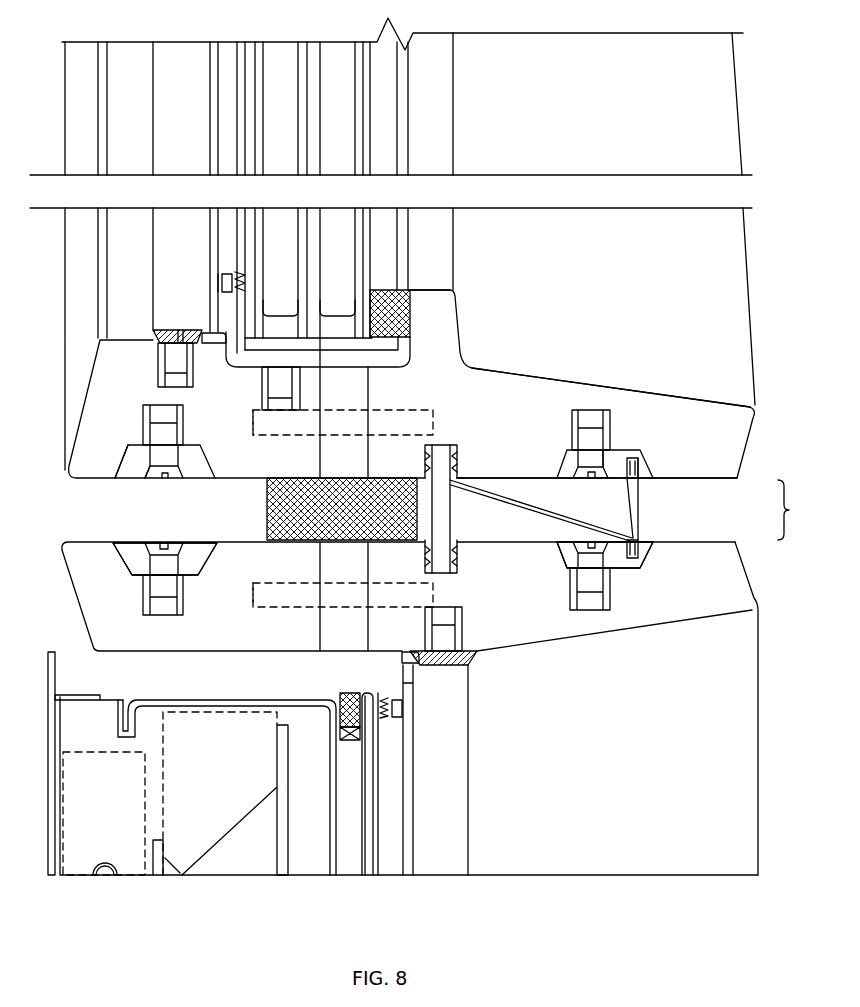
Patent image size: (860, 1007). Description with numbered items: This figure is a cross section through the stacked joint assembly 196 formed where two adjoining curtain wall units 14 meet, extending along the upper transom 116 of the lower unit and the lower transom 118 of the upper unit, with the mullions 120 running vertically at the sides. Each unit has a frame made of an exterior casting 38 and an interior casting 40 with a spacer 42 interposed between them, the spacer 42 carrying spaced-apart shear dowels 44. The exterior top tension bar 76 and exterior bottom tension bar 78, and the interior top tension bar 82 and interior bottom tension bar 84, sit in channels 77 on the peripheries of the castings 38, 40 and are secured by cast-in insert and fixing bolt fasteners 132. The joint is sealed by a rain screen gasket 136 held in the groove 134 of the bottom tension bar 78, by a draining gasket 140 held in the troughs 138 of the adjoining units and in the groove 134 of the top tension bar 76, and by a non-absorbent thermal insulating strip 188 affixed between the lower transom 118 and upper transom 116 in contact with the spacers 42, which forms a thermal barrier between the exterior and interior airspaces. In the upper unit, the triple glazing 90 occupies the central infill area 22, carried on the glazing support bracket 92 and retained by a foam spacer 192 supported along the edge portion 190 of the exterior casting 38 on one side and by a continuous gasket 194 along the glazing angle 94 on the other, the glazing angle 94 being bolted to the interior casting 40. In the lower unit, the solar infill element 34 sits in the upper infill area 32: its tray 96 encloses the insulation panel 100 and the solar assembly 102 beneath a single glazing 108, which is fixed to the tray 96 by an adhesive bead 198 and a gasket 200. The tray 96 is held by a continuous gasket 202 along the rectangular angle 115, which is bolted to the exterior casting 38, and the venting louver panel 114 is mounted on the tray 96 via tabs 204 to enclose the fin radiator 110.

The curtain wall unit 14 is at (737, 372).
The central infill area 22 is at (160, 143).
The upper infill area 32 is at (108, 673).
The solar infill element 34 is at (392, 816).
The exterior casting 38 is at (762, 432).
The interior casting 40 is at (50, 458).
The spacer 42 is at (362, 397).
The shear dowels 44 is at (422, 408).
The exterior top tension bar 76 is at (622, 563).
The channels 77 is at (128, 456).
The exterior bottom tension bar 78 is at (618, 450).
The interior top tension bar 82 is at (190, 547).
The interior bottom tension bar 84 is at (127, 470).
The triple glazing 90 is at (386, 130).
The glazing support bracket 92 is at (256, 362).
The glazing angle 94 is at (216, 292).
The tray 96 is at (195, 697).
The insulation panel 100 is at (230, 725).
The solar assembly 102 is at (296, 762).
The single glazing 108 is at (364, 712).
The fin radiator 110 is at (72, 793).
The venting louver panel 114 is at (48, 700).
The rectangular angle 115 is at (413, 684).
The upper transom 116 is at (707, 540).
The lower transom 118 is at (462, 335).
The mullions 120 is at (723, 142).
The cast-in insert and fixing bolt fasteners 132 is at (145, 425).
The groove 134 is at (640, 466).
The rain screen gasket 136 is at (638, 491).
The trough 138 is at (456, 449).
The draining gasket 140 is at (445, 518).
The thermal insulating strip 188 is at (267, 494).
The edge portion 190 is at (450, 289).
The foam spacer 192 is at (410, 292).
The continuous gasket 194 is at (232, 275).
The stacked joint assembly 196 is at (802, 510).
The adhesive bead 198 is at (340, 702).
The gasket 200 is at (355, 740).
The continuous gasket 202 is at (392, 716).
The tabs 204 is at (100, 705).